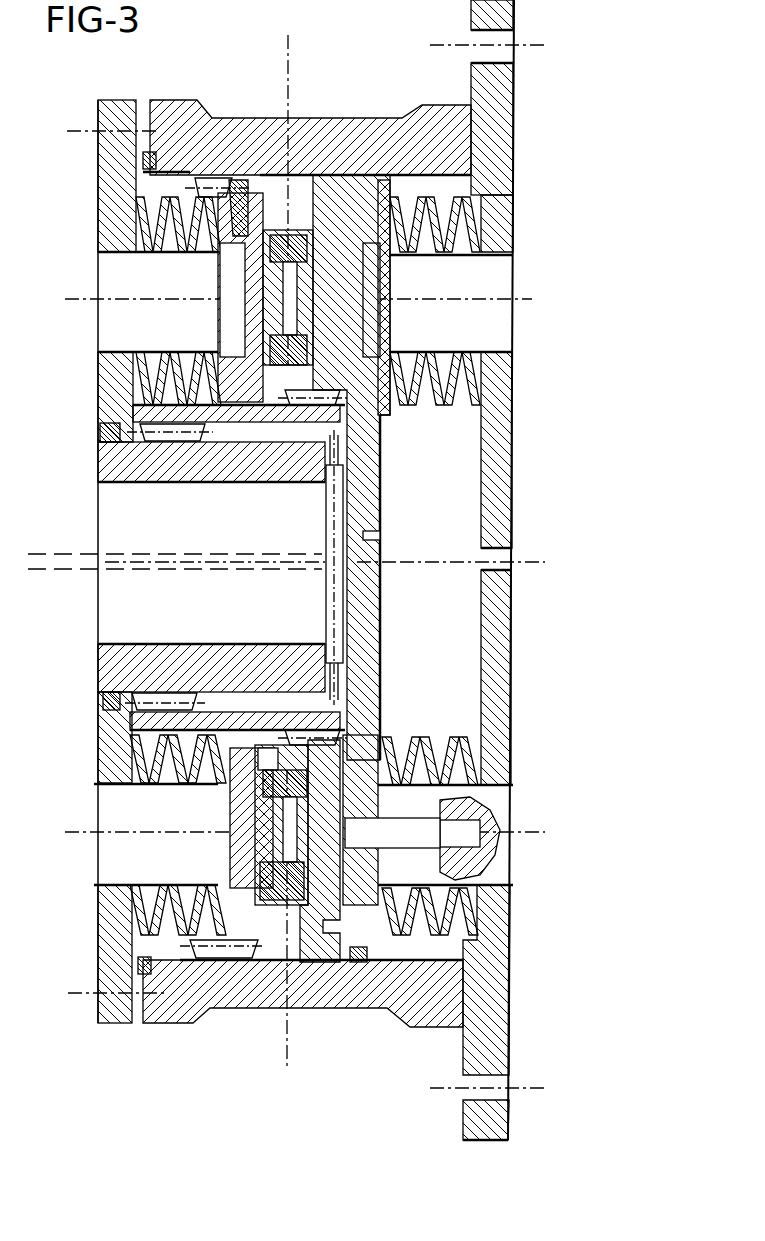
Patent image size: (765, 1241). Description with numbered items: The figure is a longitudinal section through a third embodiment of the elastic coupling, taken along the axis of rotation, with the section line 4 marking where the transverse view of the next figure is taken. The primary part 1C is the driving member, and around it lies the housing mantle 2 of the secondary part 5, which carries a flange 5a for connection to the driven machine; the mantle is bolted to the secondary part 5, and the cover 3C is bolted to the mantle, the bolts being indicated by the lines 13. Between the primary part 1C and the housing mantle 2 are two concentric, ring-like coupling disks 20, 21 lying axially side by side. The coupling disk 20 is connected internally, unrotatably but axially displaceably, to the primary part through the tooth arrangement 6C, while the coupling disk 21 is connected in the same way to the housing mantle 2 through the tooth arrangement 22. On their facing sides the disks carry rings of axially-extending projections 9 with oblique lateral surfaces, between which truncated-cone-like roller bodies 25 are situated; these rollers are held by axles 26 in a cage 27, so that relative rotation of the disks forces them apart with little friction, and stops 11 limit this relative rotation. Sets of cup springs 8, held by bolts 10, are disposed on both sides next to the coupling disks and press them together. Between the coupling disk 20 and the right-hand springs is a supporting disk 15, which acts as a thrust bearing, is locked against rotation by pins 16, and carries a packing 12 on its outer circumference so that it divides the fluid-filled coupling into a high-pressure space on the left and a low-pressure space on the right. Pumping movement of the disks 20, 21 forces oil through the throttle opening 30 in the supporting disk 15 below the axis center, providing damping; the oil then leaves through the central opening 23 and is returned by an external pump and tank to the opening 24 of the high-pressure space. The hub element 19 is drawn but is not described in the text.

The primary part 1C is at (143, 414).
The housing mantle 2 is at (421, 128).
The cover 3C is at (124, 178).
The ball bearing 4 is at (318, 1068).
The secondary part 5 is at (503, 443).
The flange 5a is at (515, 79).
The tooth arrangement 6C is at (318, 738).
The sets of springs 8 is at (150, 222).
The axially-extending projections 9 is at (252, 815).
The bolts 10 is at (106, 318).
The stops 11 is at (253, 868).
The packing 12 is at (348, 958).
The bolt lines 13 is at (100, 131).
The supporting disk 15 is at (473, 162).
The pins 16 is at (445, 808).
The hub flange 19 is at (130, 462).
The coupling disk 20 is at (380, 418).
The coupling disk 21 is at (244, 206).
The tooth arrangement 22 is at (245, 186).
The central opening 23 is at (516, 560).
The opening 24 is at (72, 567).
The roller bodies 25 is at (268, 322).
The axles 26 is at (244, 275).
The cage 27 is at (298, 236).
The throttle opening 30 is at (382, 535).